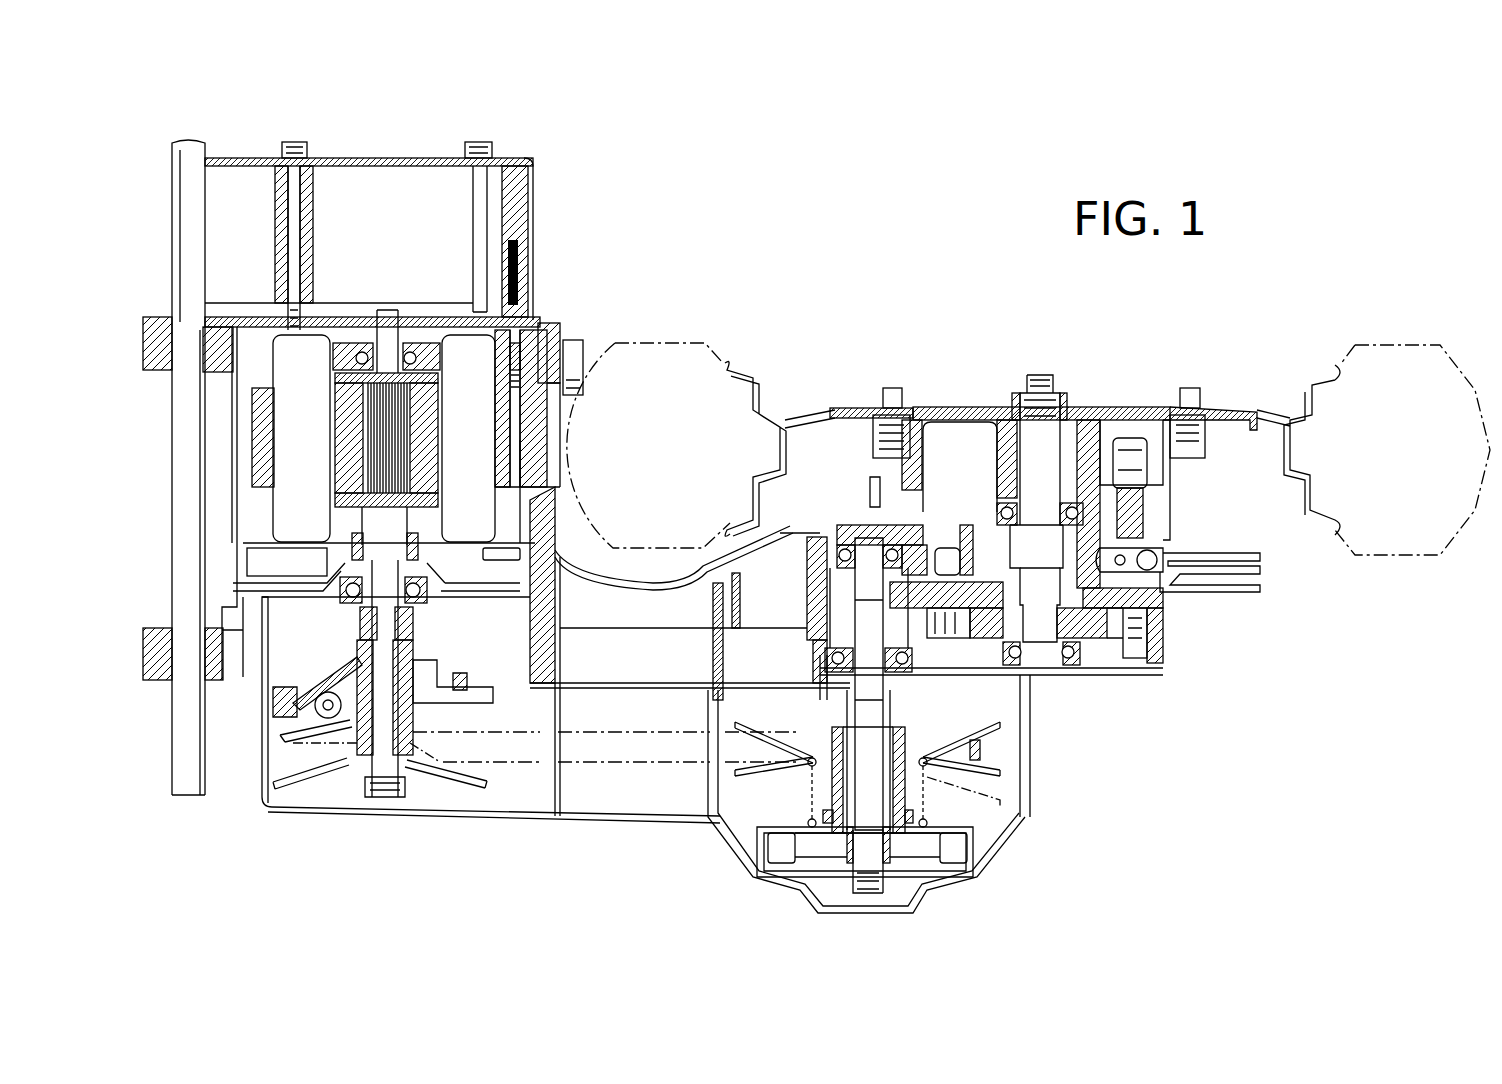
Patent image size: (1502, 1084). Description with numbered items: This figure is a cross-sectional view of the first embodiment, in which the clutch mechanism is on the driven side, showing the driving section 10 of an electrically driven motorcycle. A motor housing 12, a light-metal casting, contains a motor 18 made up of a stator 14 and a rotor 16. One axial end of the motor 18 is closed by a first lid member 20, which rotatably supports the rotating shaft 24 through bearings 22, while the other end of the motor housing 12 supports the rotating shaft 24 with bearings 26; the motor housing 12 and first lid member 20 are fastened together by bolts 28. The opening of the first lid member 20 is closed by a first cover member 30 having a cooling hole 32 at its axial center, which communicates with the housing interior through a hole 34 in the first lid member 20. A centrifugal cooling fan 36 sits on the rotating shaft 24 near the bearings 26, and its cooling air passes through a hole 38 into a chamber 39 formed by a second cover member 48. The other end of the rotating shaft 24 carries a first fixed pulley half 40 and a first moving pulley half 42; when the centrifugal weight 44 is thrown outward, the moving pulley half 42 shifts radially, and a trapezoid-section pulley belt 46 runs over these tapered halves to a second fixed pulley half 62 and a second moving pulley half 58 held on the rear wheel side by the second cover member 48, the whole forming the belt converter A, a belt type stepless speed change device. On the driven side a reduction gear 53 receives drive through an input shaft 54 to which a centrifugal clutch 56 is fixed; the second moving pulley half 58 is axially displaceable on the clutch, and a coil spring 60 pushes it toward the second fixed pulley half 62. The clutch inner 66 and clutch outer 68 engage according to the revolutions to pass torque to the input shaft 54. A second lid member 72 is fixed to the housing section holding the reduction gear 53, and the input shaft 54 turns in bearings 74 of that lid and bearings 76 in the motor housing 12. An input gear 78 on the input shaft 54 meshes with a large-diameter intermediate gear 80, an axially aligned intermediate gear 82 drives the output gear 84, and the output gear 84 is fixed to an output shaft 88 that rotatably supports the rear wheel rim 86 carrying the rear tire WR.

The driving section 10 is at (886, 357).
The motor housing 12 is at (212, 420).
The stator 14 is at (401, 436).
The rotor 16 is at (341, 330).
The motor 18 is at (255, 525).
The first lid member 20 is at (228, 325).
The bearings 22 is at (351, 335).
The rotating shaft 24 is at (394, 335).
The bearings 26 is at (433, 567).
The bolts 28 is at (548, 330).
The first cover member 30 is at (533, 210).
The cooling hole 32 is at (346, 160).
The hole 34 is at (500, 330).
The centrifugal cooling fan 36 is at (270, 548).
The hole 38 is at (262, 620).
The chamber 39 is at (502, 647).
The first fixed pulley half 40 is at (298, 790).
The first moving pulley half 42 is at (283, 740).
The centrifugal weight 44 is at (318, 685).
The pulley belt 46 is at (348, 780).
The second cover member 48 is at (526, 815).
The belt converter A is at (580, 775).
The reduction gear 53 is at (1098, 685).
The input shaft 54 is at (943, 885).
The centrifugal clutch 56 is at (818, 882).
The second moving pulley half 58 is at (1000, 755).
The coil spring 60 is at (808, 765).
The second fixed pulley half 62 is at (1022, 711).
The clutch inner 66 is at (955, 829).
The clutch outer 68 is at (988, 872).
The second lid member 72 is at (958, 407).
The bearings 74 is at (826, 659).
The bearings 76 is at (848, 540).
The input gear 78 is at (833, 560).
The intermediate gear 80 is at (923, 530).
The intermediate gear 82 is at (948, 650).
The output gear 84 is at (1120, 629).
The rear wheel rim 86 is at (1326, 375).
The output shaft 88 is at (1048, 430).
The rear tire WR is at (1383, 345).